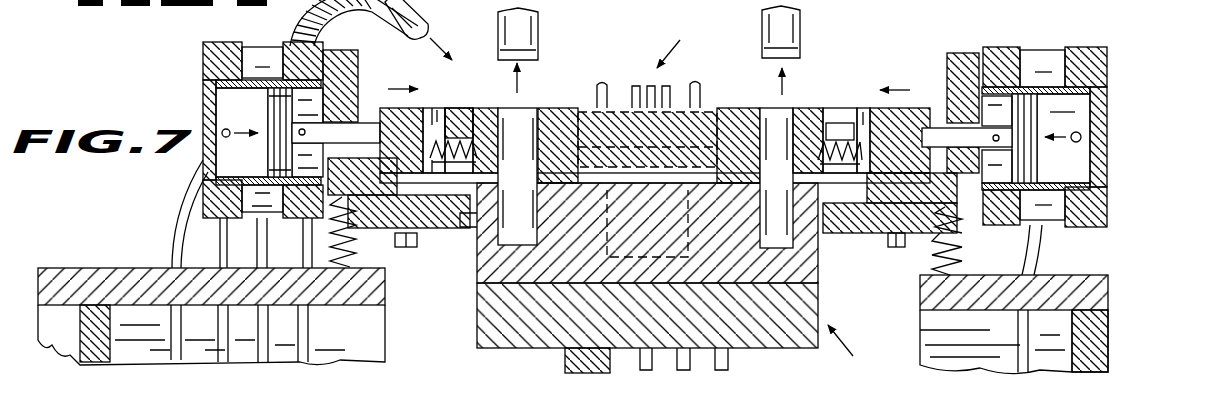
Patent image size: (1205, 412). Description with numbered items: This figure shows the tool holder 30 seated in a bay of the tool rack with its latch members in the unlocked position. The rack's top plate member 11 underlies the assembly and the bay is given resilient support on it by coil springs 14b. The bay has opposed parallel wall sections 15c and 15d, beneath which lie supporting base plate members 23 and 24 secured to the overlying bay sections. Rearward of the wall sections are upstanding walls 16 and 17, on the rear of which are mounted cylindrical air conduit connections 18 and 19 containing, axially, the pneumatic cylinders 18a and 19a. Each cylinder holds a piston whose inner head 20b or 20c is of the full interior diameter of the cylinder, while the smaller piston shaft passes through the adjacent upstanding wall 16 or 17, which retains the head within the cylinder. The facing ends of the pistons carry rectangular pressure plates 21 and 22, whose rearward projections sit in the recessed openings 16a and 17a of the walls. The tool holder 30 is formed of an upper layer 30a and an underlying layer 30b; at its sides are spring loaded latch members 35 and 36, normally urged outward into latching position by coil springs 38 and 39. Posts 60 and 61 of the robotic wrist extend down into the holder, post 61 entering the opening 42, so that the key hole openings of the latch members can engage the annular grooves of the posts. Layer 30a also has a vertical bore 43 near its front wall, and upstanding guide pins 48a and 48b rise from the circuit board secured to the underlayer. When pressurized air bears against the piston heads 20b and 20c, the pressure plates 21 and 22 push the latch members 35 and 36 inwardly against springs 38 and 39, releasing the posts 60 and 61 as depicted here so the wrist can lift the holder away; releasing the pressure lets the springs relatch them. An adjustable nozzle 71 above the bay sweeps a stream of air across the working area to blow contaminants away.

The top plate member 11 is at (77, 280).
The coil springs 14b is at (380, 258).
The parallel wall section 15c is at (372, 62).
The parallel wall section 15d is at (965, 52).
The upstanding wall 16 is at (300, 50).
The recessed opening 16a is at (345, 153).
The upstanding wall 17 is at (1000, 47).
The recessed opening 17a is at (955, 162).
The cylindrical air conduit connection 18 is at (232, 42).
The pneumatic cylinder 18a is at (230, 100).
The cylindrical air conduit connection 19 is at (1090, 47).
The pneumatic cylinder 19a is at (1080, 110).
The piston head 20b is at (265, 105).
The piston head 20c is at (1090, 148).
The pressure plate 21 is at (381, 105).
The pressure plate 22 is at (912, 108).
The supporting base plate member 23 is at (452, 233).
The supporting base plate member 24 is at (840, 235).
The tool holder 30 is at (655, 197).
The layer 30a is at (572, 105).
The layer 30b is at (470, 275).
The latch member 35 is at (437, 105).
The latch member 36 is at (864, 108).
The coil springs 38 is at (460, 135).
The coil springs 39 is at (842, 125).
The opening 42 is at (517, 122).
The vertical passage or bore 43 is at (775, 108).
The guide pin 48a is at (608, 92).
The guide pin 48b is at (700, 90).
The post 60 is at (538, 24).
The post 61 is at (800, 22).
The adjustable nozzle 71 is at (422, 30).